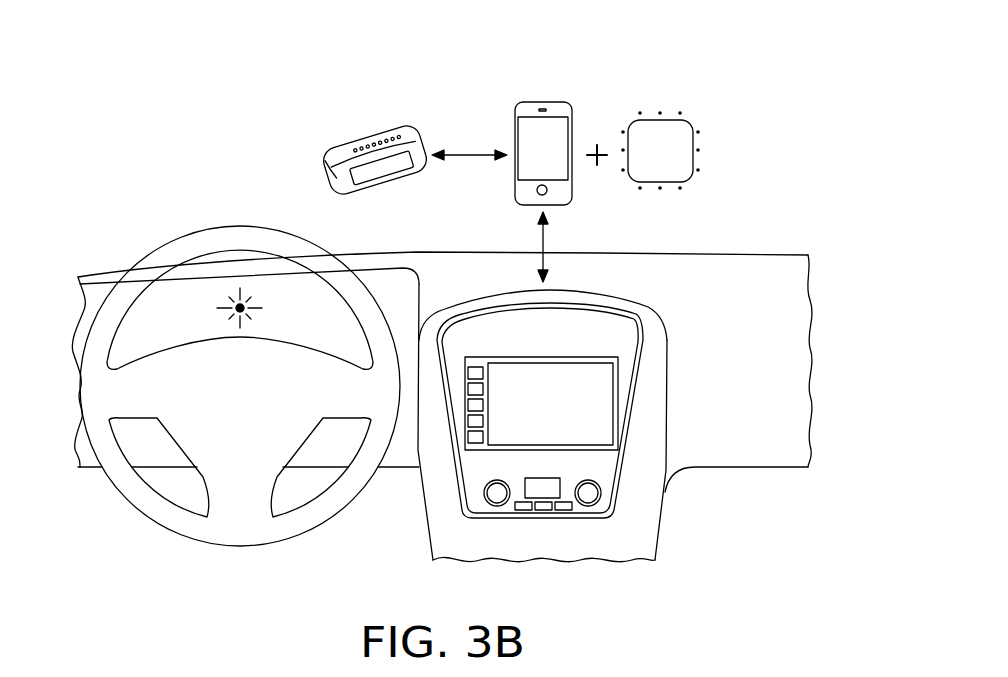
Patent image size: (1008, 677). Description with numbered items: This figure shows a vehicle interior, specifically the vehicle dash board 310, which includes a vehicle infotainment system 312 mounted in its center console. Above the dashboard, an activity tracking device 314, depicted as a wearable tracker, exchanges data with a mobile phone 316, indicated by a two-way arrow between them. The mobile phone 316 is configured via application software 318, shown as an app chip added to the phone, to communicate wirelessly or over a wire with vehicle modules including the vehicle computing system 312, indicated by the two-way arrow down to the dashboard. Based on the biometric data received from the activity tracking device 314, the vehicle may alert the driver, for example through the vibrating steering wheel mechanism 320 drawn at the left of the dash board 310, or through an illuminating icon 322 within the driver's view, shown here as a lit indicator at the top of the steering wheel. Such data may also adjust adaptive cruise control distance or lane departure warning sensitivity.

The vehicle dash board 310 is at (743, 72).
The vehicle infotainment system 312 is at (645, 488).
The activity tracking device 314 is at (327, 160).
The mobile phone 316 is at (572, 123).
The application software 318 is at (693, 160).
The vibrating steering wheel mechanism 320 is at (137, 265).
The illuminating icon 322 is at (236, 302).